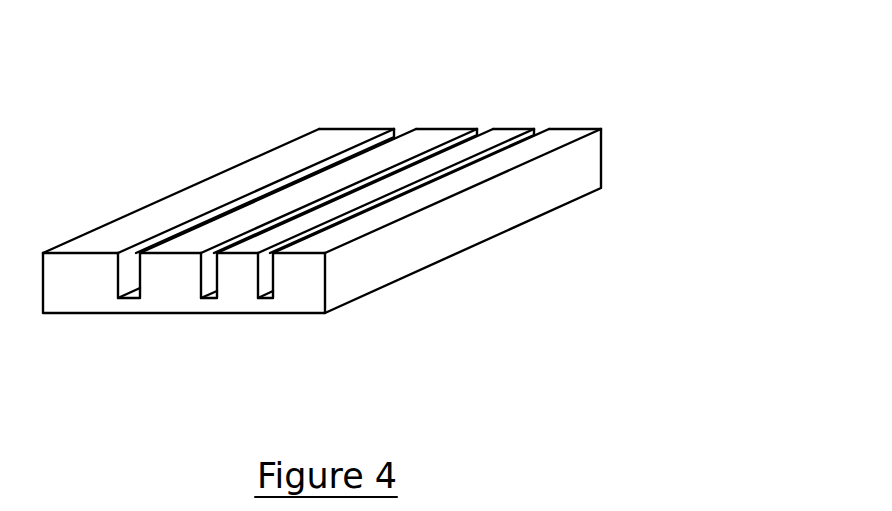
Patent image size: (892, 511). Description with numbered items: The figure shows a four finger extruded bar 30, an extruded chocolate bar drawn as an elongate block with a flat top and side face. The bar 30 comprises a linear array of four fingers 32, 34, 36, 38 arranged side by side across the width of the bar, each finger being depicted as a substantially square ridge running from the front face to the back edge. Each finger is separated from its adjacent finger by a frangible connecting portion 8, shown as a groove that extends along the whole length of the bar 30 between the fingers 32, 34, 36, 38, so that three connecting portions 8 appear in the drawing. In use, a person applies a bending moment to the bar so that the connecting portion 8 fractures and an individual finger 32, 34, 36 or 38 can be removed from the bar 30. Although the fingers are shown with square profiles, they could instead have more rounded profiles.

The four finger extruded bar 30 is at (488, 289).
The finger 32 is at (358, 128).
The finger 34 is at (447, 128).
The finger 36 is at (515, 128).
The finger 38 is at (578, 128).
The frangible connecting portion 8 is at (128, 304).